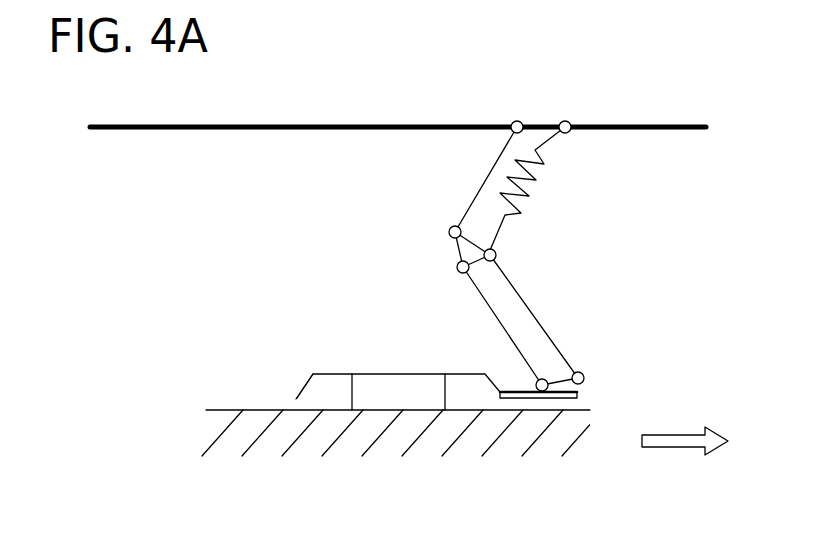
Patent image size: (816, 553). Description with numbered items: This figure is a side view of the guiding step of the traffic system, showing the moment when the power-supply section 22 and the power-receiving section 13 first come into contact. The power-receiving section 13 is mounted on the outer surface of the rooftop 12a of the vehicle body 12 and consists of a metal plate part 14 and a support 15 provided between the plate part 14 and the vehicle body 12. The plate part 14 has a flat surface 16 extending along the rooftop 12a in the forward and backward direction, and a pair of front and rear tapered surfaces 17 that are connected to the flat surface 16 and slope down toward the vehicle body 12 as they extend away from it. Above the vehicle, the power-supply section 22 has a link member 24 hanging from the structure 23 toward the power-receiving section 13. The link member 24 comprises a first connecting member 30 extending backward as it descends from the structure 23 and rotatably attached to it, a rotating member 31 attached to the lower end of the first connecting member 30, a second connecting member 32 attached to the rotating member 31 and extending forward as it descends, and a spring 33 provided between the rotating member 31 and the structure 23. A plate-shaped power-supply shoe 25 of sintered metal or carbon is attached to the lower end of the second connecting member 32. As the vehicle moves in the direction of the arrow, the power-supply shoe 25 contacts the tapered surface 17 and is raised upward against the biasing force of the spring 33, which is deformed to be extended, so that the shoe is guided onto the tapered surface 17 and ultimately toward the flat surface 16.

The vehicle body 12 is at (230, 440).
The rooftop 12a is at (287, 414).
The power-receiving section 13 is at (280, 368).
The plate part 14 is at (370, 313).
The support 15 is at (372, 393).
The flat surface 16 is at (397, 374).
The tapered surface 17 is at (303, 385).
The power-supply section 22 is at (418, 200).
The structure 23 is at (437, 125).
The link member 24 is at (715, 82).
The power-supply shoe 25 is at (580, 393).
The first connecting member 30 is at (488, 177).
The rotating member 31 is at (494, 252).
The second connecting member 32 is at (520, 300).
The spring 33 is at (548, 172).